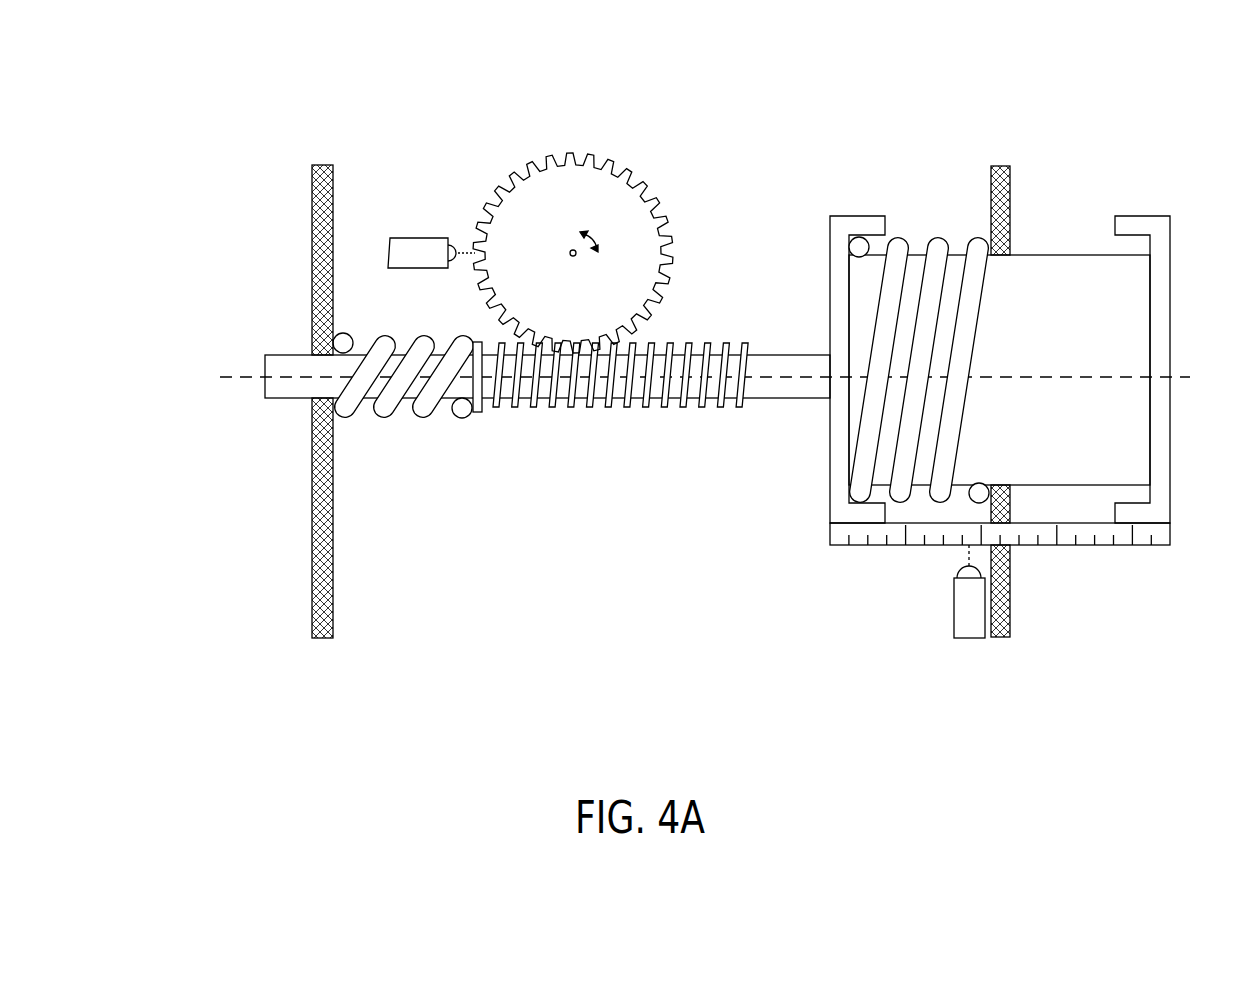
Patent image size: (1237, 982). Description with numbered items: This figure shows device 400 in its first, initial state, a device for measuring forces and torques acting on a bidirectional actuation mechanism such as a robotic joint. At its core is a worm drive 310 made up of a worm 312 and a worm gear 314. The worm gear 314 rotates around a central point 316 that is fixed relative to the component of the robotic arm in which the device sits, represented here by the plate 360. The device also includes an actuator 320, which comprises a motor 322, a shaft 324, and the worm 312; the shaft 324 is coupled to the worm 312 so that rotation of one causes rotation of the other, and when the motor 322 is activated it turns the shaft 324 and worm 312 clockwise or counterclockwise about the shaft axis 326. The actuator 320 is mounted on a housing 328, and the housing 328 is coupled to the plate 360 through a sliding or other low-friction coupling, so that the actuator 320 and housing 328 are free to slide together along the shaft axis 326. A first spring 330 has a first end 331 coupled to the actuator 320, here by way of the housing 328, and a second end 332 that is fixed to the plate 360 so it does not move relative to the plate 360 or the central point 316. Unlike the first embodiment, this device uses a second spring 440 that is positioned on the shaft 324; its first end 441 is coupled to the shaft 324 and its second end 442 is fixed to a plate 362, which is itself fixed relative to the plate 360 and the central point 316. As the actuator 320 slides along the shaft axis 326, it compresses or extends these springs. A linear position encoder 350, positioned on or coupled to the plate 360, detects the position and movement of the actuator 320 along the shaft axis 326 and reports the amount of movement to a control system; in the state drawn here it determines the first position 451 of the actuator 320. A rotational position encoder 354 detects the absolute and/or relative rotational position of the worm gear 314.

The device 400 is at (447, 46).
The worm drive 310 is at (446, 315).
The worm 312 is at (562, 412).
The worm gear 314 is at (606, 162).
The central point 316 is at (573, 253).
The actuator 320 is at (782, 517).
The motor 322 is at (1012, 273).
The shaft 324 is at (795, 360).
The shaft axis 326 is at (230, 378).
The housing 328 is at (1160, 500).
The first spring 330 is at (943, 250).
The first end 331 is at (858, 246).
The second end 332 is at (975, 498).
The linear position encoder 350 is at (966, 605).
The rotational position encoder 354 is at (428, 252).
The plate 360 is at (1000, 633).
The plate 362 is at (323, 613).
The second spring 440 is at (347, 408).
The first end 441 is at (462, 408).
The second end 442 is at (341, 341).
The first position 451 is at (970, 543).